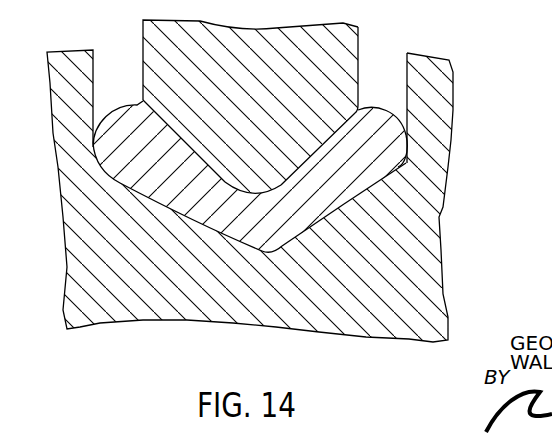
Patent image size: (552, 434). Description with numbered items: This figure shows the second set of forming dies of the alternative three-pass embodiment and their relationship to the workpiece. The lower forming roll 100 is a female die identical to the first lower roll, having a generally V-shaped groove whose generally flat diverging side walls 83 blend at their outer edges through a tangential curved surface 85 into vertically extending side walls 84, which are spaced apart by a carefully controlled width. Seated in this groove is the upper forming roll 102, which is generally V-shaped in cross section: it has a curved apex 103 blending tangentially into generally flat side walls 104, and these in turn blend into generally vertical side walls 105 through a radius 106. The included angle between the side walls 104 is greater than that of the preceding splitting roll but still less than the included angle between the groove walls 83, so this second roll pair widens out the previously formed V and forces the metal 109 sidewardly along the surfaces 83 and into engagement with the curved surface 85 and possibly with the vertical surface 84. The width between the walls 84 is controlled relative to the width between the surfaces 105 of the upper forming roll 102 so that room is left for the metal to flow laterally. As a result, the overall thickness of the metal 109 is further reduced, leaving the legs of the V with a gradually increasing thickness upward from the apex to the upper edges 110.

The lower forming roll 100 is at (413, 293).
The upper forming roll 102 is at (346, 57).
The curved apex 103 is at (245, 194).
The side walls 104 is at (326, 136).
The vertical side walls 105 is at (340, 71).
The radius 106 is at (359, 110).
The metal 109 is at (353, 224).
The upper edges 110 is at (360, 110).
The side walls 83 is at (366, 191).
The vertical side walls 84 is at (410, 94).
The curved surface 85 is at (400, 164).